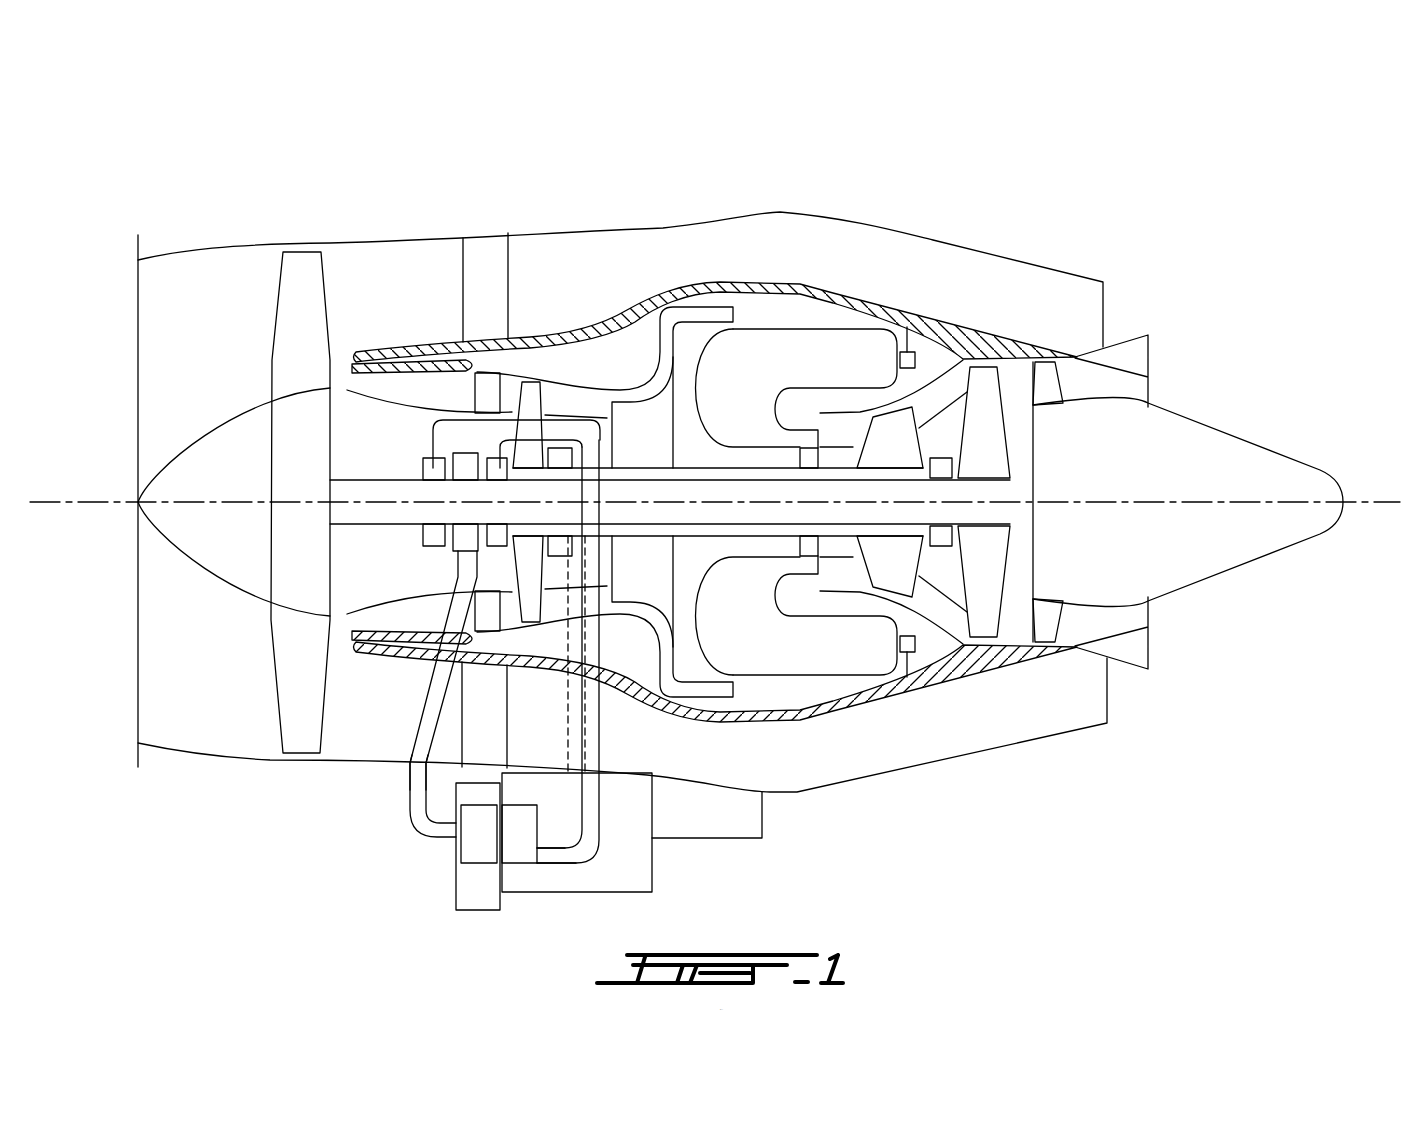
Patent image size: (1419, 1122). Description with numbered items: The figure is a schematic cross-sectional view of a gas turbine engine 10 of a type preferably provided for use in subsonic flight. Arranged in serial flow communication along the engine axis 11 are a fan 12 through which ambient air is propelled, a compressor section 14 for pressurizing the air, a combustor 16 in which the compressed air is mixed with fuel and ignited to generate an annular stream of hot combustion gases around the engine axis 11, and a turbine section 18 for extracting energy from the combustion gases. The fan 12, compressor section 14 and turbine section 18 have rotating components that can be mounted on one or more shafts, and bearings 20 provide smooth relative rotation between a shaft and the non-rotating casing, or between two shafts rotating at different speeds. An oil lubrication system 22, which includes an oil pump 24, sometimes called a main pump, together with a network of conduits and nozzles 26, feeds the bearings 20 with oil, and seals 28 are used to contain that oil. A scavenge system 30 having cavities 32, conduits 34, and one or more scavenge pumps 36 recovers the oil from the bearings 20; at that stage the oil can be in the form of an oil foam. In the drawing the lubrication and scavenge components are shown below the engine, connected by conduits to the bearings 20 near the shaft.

The gas turbine engine 10 is at (955, 172).
The engine axis 11 is at (1375, 495).
The fan 12 is at (300, 672).
The compressor section 14 is at (565, 397).
The combustor 16 is at (798, 352).
The turbine section 18 is at (940, 572).
The bearings 20 is at (467, 453).
The oil lubrication system 22 is at (410, 808).
The oil pump 24 is at (473, 853).
The network of conduits and nozzles 26 is at (410, 762).
The seals 28 is at (433, 458).
The scavenge system 30 is at (598, 790).
The cavities 32 is at (492, 410).
The conduits 34 is at (587, 857).
The scavenge pumps 36 is at (513, 853).